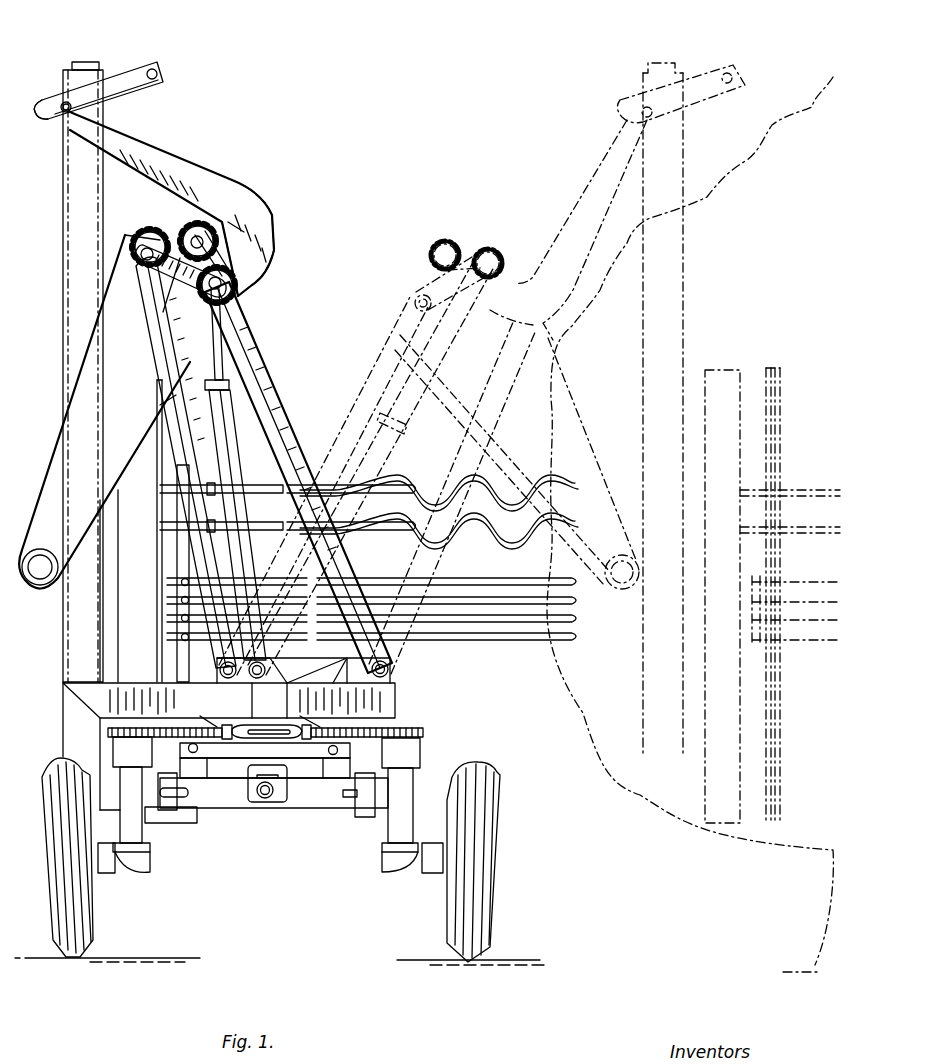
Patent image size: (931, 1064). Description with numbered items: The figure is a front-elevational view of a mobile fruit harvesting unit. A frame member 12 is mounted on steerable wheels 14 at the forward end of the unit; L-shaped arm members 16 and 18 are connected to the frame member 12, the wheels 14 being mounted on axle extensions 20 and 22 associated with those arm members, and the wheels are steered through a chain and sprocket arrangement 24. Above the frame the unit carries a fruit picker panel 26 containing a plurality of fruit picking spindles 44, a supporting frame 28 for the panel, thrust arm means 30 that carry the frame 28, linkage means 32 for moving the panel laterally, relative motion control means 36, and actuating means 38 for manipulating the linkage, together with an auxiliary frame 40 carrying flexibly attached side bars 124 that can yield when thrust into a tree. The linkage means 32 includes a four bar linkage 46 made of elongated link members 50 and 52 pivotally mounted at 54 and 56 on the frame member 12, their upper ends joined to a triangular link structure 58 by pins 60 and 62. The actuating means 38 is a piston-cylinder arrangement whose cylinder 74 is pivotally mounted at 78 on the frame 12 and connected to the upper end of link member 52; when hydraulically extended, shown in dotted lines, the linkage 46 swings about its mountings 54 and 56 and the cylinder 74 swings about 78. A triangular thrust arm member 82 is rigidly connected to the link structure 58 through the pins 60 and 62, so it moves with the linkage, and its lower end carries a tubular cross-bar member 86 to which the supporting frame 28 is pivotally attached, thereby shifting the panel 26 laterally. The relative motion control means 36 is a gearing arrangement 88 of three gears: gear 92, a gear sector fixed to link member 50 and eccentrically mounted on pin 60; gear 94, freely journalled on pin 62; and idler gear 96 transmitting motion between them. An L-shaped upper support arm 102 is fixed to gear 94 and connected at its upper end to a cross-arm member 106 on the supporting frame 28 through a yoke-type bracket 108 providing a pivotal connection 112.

The frame member 12 is at (398, 698).
The steerable wheels 14 is at (73, 960).
The L-shaped arm member 16 is at (146, 838).
The L-shaped arm member 18 is at (385, 832).
The axle extension 20 is at (98, 872).
The axle extension 22 is at (440, 872).
The chain and sprocket arrangement 24 is at (380, 742).
The fruit picker panel 26 is at (120, 604).
The supporting frame 28 is at (66, 662).
The thrust arm means 30 is at (125, 480).
The linkage means 32 is at (300, 446).
The relative motion control means 36 is at (200, 222).
The actuating means 38 is at (235, 413).
The auxiliary frame 40 is at (175, 667).
The fruit picking spindles 44 is at (270, 522).
The four bar linkage 46 is at (298, 376).
The link member 50 is at (168, 368).
The link member 52 is at (254, 347).
The pivotal mounting 54 is at (224, 677).
The pivotal mounting 56 is at (390, 669).
The link structure 58 is at (158, 298).
The pin 60 is at (140, 257).
The pin 62 is at (226, 285).
The cylinder 74 is at (178, 408).
The pivotal mounting 78 is at (268, 669).
The thrust arm member 82 is at (112, 450).
The tubular cross-bar member 86 is at (44, 560).
The gearing arrangement 88 is at (175, 220).
The gear 92 is at (150, 228).
The gear 94 is at (238, 292).
The idler gear 96 is at (222, 224).
The L-shaped arm member 102 is at (145, 145).
The cross-arm member 106 is at (58, 100).
The yoke-type bracket 108 is at (125, 82).
The pivotal connection 112 is at (62, 118).
The side bars 124 is at (482, 571).